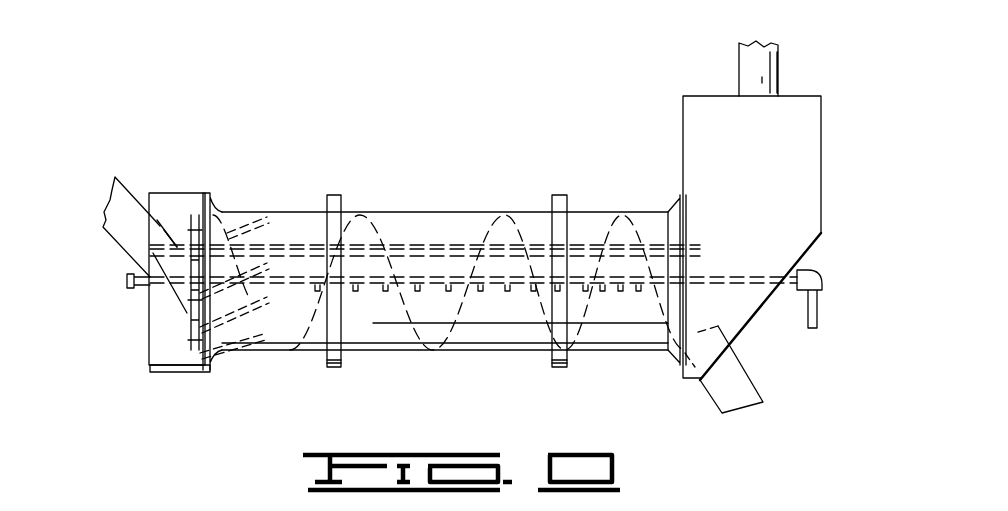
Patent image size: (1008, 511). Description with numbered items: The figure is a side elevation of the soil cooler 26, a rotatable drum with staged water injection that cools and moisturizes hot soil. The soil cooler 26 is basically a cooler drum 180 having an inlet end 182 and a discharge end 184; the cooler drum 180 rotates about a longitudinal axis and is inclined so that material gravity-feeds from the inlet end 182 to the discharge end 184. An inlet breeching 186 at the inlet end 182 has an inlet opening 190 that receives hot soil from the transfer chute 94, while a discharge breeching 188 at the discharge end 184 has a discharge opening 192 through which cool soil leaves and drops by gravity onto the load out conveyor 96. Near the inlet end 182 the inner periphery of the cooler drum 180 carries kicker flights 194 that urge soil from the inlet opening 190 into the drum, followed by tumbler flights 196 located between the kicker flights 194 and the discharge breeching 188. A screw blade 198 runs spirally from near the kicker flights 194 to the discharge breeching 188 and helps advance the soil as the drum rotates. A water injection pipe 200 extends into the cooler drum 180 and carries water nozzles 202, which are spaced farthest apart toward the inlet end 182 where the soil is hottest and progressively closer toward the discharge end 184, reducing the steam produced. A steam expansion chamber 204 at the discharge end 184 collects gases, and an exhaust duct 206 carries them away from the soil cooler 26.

The soil cooler 26 is at (485, 168).
The transfer chute 94 is at (120, 202).
The load out conveyor 96 is at (733, 393).
The cooler drum 180 is at (520, 208).
The inlet end 182 is at (147, 333).
The discharge end 184 is at (817, 243).
The inlet breeching 186 is at (178, 203).
The discharge breeching 188 is at (700, 197).
The inlet opening 190 is at (140, 250).
The discharge opening 192 is at (740, 350).
The kicker flight 194 is at (233, 213).
The tumbler flight 196 is at (410, 217).
The screw blade 198 is at (348, 207).
The water injection pipe 200 is at (137, 285).
The water nozzle 202 is at (350, 367).
The steam expansion chamber 204 is at (763, 165).
The exhaust duct 206 is at (755, 73).